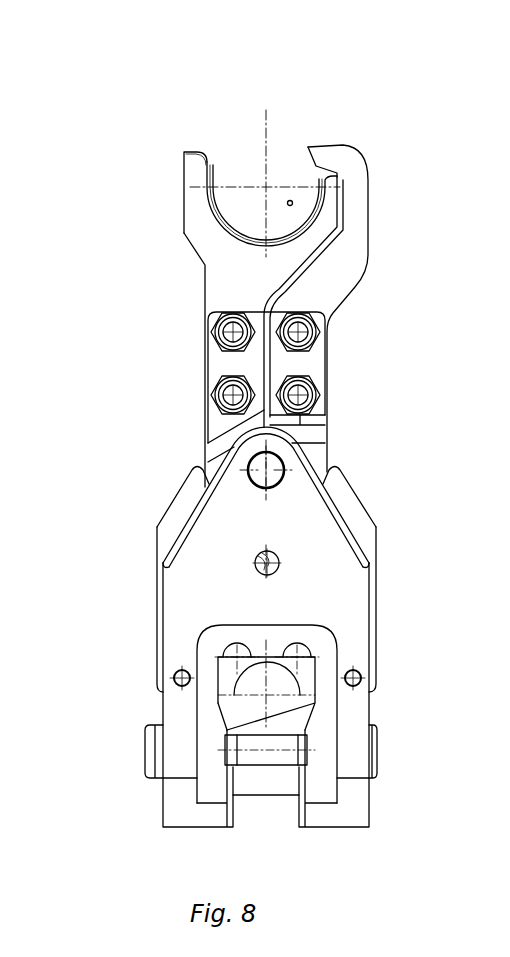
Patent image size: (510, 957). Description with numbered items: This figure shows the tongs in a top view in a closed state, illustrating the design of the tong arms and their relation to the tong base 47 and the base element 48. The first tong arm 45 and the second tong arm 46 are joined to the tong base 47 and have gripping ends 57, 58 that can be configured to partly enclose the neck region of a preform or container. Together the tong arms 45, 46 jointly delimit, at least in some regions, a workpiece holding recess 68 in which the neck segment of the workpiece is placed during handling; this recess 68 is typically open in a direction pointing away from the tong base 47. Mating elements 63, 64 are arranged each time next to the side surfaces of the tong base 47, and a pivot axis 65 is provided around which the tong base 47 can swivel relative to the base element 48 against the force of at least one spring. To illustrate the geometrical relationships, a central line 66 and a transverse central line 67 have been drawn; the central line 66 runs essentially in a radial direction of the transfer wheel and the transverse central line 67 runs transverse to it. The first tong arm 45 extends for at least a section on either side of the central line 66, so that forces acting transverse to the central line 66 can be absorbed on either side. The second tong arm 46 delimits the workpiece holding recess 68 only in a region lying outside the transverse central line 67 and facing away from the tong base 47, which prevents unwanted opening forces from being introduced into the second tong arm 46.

The first tong arm 45 is at (176, 257).
The second tong arm 46 is at (335, 268).
The tong base 47 is at (327, 450).
The base element 48 is at (343, 620).
The gripping end 57 is at (193, 168).
The gripping end 58 is at (318, 156).
The mating element 63 is at (172, 518).
The mating element 64 is at (362, 518).
The pivot axis 65 is at (285, 471).
The central line 66 is at (265, 125).
The transverse central line 67 is at (233, 180).
The workpiece holding recess 68 is at (292, 204).